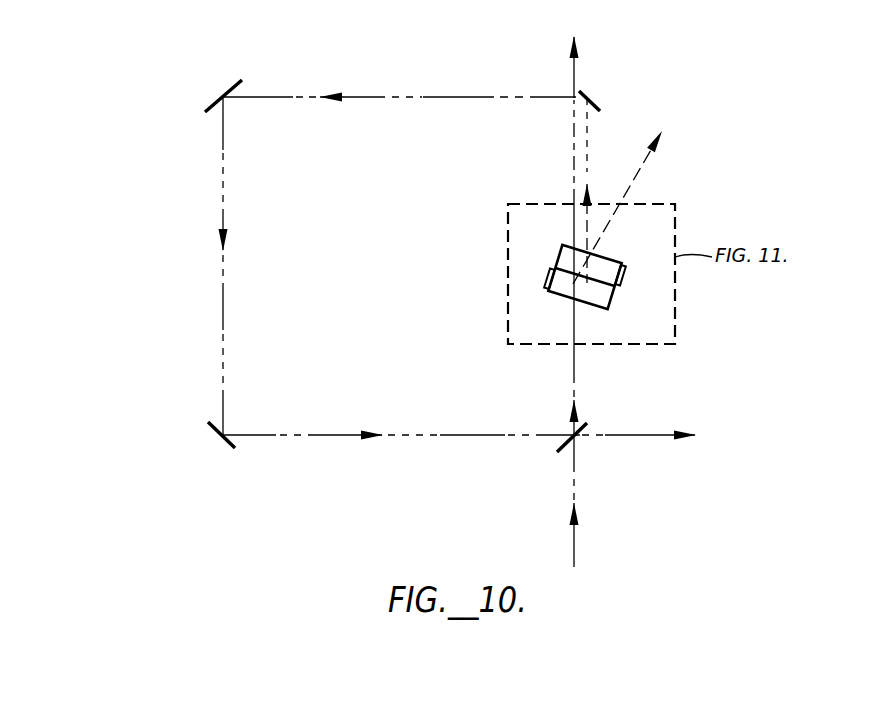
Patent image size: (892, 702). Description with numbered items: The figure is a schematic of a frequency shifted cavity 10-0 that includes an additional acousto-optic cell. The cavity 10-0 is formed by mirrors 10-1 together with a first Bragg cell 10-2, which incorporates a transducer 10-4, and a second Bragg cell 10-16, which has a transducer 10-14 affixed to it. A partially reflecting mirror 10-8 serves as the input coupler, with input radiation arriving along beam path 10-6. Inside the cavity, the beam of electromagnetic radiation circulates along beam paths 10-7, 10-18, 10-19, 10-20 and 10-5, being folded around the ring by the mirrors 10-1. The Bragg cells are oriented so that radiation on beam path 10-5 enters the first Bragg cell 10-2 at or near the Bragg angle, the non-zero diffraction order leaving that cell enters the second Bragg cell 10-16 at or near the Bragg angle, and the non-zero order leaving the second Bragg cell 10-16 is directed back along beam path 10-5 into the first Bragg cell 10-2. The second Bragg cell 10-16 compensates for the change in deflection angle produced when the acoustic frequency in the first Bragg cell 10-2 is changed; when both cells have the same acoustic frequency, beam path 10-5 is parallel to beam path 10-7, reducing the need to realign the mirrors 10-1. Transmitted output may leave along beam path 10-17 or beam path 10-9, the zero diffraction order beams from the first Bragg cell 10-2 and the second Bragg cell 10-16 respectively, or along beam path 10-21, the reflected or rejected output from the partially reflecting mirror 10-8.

The frequency shifted cavity 10-0 is at (114, 185).
The mirrors 10-1 is at (230, 85).
The first Bragg cell 10-2 is at (598, 308).
The transducer 10-4 is at (549, 282).
The beam path 10-5 is at (572, 350).
The input beam path 10-6 is at (572, 534).
The beam path 10-7 is at (588, 130).
The partially reflecting mirror 10-8 is at (580, 428).
The output beam path 10-9 is at (650, 158).
The transducer 10-14 is at (622, 277).
The second Bragg cell 10-16 is at (616, 259).
The output beam path 10-17 is at (577, 78).
The beam path 10-18 is at (427, 97).
The beam path 10-19 is at (223, 295).
The beam path 10-20 is at (278, 435).
The output beam path 10-21 is at (635, 438).